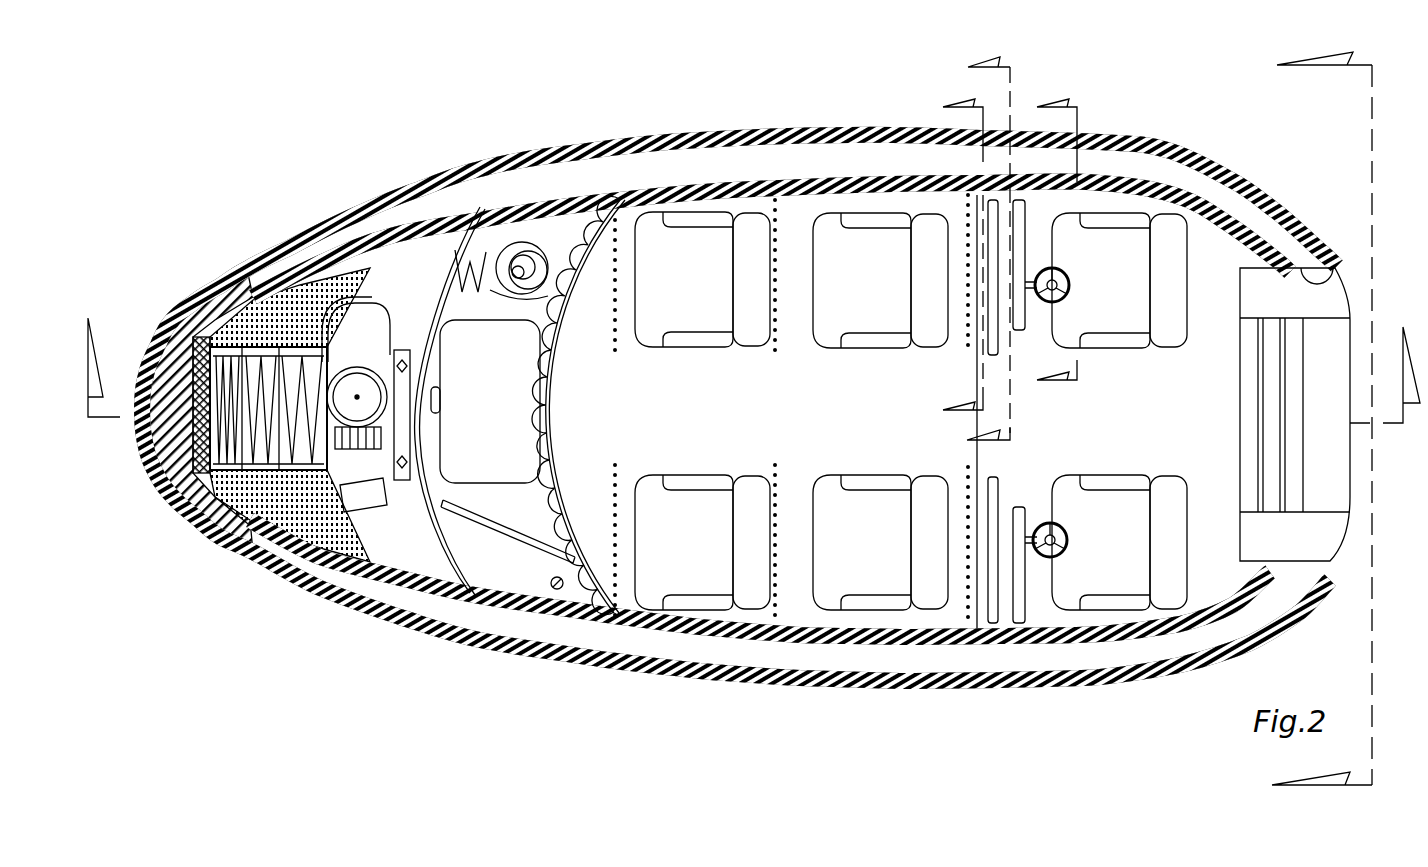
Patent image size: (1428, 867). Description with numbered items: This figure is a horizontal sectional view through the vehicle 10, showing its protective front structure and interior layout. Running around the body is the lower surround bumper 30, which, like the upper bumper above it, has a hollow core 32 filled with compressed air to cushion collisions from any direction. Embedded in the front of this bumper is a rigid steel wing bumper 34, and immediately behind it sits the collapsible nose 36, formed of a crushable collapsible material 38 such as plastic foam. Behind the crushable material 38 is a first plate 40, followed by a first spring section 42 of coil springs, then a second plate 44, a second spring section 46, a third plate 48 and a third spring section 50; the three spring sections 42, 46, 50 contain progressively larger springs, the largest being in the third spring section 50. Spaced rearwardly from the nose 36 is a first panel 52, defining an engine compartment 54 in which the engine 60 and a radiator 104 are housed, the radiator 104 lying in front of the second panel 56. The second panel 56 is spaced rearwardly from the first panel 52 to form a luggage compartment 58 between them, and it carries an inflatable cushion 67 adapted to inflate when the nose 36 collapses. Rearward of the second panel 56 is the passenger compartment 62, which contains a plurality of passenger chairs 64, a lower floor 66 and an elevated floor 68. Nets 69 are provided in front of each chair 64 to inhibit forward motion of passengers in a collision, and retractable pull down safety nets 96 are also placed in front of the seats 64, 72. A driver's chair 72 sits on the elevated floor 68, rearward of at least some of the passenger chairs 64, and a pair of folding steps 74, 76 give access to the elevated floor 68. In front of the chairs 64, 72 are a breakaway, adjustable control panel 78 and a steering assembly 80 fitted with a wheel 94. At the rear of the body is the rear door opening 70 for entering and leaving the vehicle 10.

The vehicle 10 is at (345, 118).
The lower surround bumper 30 is at (403, 192).
The hollow core 32 is at (343, 237).
The wing bumper 34 is at (310, 330).
The collapsible nose 36 is at (205, 473).
The collapsible material 38 is at (192, 508).
The first plate 40 is at (185, 316).
The first spring section 42 is at (205, 540).
The second plate 44 is at (225, 558).
The second spring section 46 is at (250, 470).
The third plate 48 is at (265, 472).
The third spring section 50 is at (283, 490).
The first panel 52 is at (440, 258).
The engine compartment 54 is at (425, 560).
The second panel 56 is at (564, 393).
The luggage compartment 58 is at (545, 500).
The engine 60 is at (353, 307).
The passenger compartment 62 is at (891, 370).
The passenger chairs 64 is at (911, 411).
The lower floor 66 is at (866, 411).
The inflatable cushion 67 is at (567, 430).
The elevated floor 68 is at (1082, 419).
The nets 69 is at (615, 353).
The rear door opening 70 is at (1246, 353).
The driver's chair 72 is at (1119, 542).
The folding step 74 is at (1245, 420).
The folding step 76 is at (1287, 445).
The control panel 78 is at (990, 355).
The steering assembly 80 is at (1024, 335).
The wheel 94 is at (1068, 300).
The retractable pull down safety nets 96 is at (968, 353).
The radiator 104 is at (405, 365).